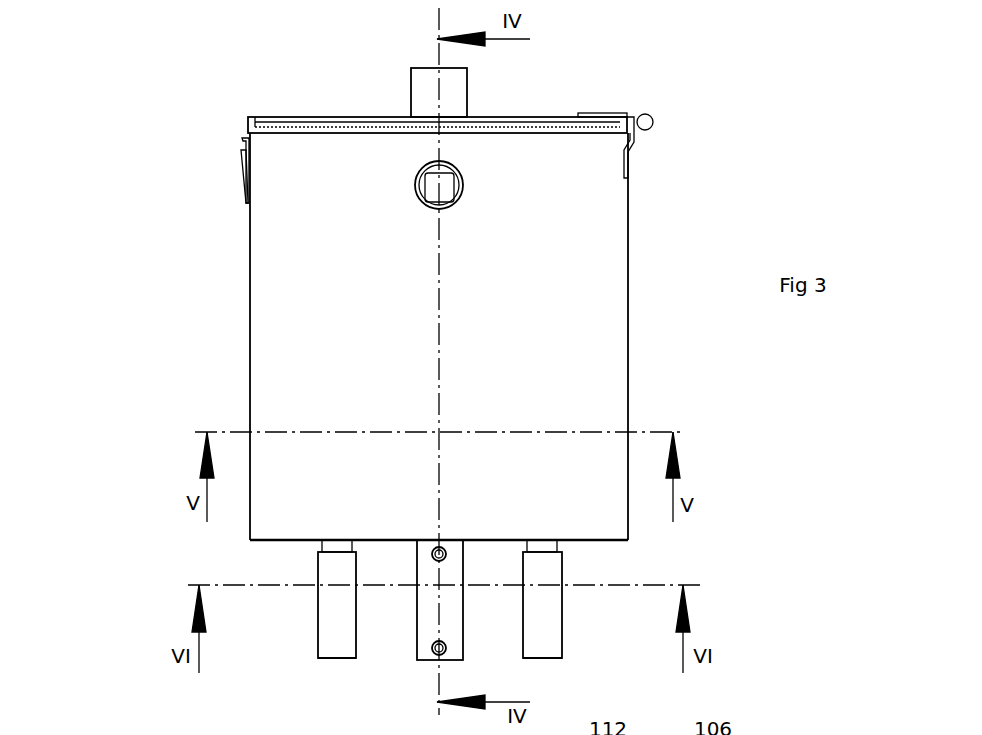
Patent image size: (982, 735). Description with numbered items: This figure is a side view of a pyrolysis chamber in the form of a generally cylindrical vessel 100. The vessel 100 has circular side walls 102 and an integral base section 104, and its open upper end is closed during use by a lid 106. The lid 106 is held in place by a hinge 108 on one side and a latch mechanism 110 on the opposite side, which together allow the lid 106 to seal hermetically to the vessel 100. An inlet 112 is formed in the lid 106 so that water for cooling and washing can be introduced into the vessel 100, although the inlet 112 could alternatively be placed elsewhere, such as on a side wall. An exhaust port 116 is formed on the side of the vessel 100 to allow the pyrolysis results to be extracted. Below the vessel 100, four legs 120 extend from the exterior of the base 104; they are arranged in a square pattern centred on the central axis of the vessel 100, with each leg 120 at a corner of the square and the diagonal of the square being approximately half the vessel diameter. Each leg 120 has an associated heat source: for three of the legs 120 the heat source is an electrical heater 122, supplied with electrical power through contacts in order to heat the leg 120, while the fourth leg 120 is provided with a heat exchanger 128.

The vessel 100 is at (246, 307).
The side walls 102 is at (588, 353).
The base section 104 is at (595, 540).
The lid 106 is at (513, 116).
The hinge 108 is at (653, 118).
The latch mechanism 110 is at (240, 160).
The inlet 112 is at (410, 93).
The exhaust port 116 is at (455, 207).
The legs 120 is at (332, 605).
The electrical heater 122 is at (343, 660).
The heat exchanger 128 is at (463, 638).